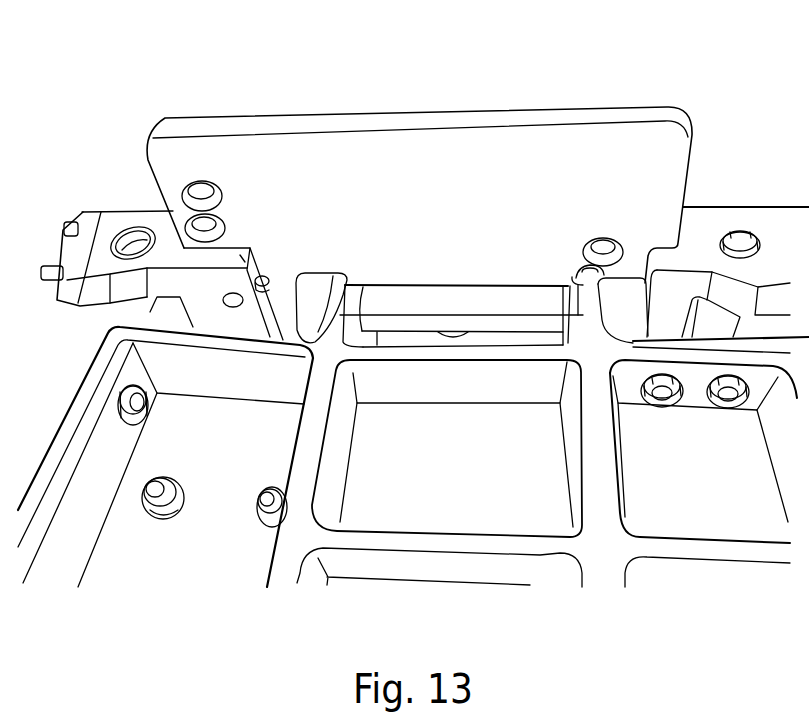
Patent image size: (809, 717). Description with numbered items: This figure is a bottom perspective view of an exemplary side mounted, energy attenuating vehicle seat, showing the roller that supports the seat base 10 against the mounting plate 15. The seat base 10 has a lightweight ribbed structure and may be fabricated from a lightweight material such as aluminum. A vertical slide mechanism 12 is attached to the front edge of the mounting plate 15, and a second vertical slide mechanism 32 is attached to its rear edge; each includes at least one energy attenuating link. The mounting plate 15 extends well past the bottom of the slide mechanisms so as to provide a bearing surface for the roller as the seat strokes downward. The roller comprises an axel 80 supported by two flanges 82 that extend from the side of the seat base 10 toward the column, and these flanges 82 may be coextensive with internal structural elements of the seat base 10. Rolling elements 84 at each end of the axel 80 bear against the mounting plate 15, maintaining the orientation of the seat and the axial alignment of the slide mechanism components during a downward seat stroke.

The seat base 10 is at (222, 513).
The vertical slide mechanism 12 is at (721, 233).
The mounting plate 15 is at (233, 123).
The vertical slide mechanism 32 is at (132, 217).
The axel 80 is at (520, 297).
The flanges 82 is at (563, 315).
The rolling elements 84 is at (312, 290).